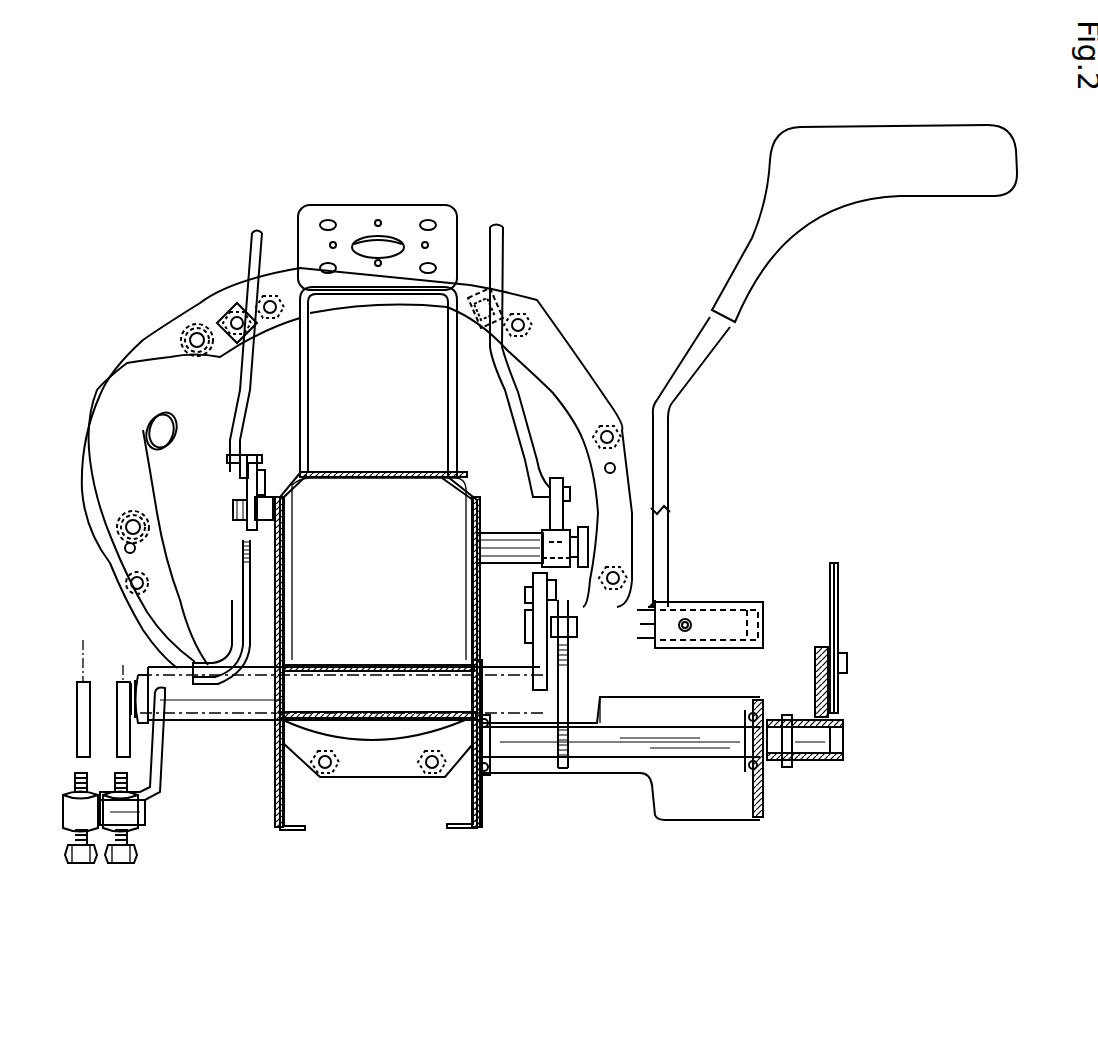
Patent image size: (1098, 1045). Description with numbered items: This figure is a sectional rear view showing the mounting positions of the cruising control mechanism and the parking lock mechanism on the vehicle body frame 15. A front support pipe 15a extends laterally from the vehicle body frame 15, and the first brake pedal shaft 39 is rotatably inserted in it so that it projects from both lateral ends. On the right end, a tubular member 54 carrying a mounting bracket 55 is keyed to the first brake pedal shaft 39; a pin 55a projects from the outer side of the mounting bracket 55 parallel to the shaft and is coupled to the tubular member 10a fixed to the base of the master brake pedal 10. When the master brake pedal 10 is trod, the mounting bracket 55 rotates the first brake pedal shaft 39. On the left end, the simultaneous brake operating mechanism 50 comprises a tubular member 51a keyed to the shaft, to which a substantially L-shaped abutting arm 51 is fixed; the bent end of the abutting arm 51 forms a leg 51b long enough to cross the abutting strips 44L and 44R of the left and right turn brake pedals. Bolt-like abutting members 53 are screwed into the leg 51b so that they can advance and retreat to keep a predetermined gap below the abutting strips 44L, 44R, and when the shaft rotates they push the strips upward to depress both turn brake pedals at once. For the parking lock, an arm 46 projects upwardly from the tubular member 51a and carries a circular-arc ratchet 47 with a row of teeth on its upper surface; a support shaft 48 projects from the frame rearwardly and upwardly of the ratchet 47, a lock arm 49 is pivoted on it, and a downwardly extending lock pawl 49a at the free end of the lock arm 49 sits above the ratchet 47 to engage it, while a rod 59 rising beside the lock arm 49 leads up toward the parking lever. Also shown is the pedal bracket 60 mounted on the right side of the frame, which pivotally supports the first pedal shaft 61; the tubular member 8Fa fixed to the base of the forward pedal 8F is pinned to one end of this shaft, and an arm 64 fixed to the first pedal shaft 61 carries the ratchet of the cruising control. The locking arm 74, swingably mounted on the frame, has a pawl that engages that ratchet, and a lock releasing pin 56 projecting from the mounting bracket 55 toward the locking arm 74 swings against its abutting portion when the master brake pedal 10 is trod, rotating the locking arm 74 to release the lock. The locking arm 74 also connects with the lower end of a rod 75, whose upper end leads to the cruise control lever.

The master brake pedal 10 is at (773, 170).
The tubular member 10a is at (714, 600).
The vehicle body frame 15 is at (372, 470).
The front support pipe 15a is at (388, 665).
The first brake pedal shaft 39 is at (308, 683).
The abutting strip 44L is at (83, 642).
The abutting strip 44R is at (123, 666).
The arm 46 is at (246, 625).
The ratchet 47 is at (244, 548).
The support shaft 48 is at (232, 516).
The lock arm 49 is at (246, 494).
The lock pawl 49a is at (240, 481).
The simultaneous brake operating mechanism 50 is at (191, 816).
The abutting arm 51 is at (165, 760).
The tubular member 51a is at (172, 712).
The leg 51b is at (150, 815).
The abutting members 53 is at (100, 855).
The tubular member 54 is at (500, 665).
The mounting bracket 55 is at (533, 648).
The pin 55a is at (650, 640).
The lock releasing pin 56 is at (545, 570).
The rod 59 is at (233, 402).
The pedal bracket 60 is at (764, 793).
The first pedal shaft 61 is at (622, 752).
The arm 64 is at (560, 775).
The locking arm 74 is at (562, 523).
The rod 75 is at (497, 265).
The forward pedal 8F is at (840, 585).
The tubular member 8Fa is at (845, 712).